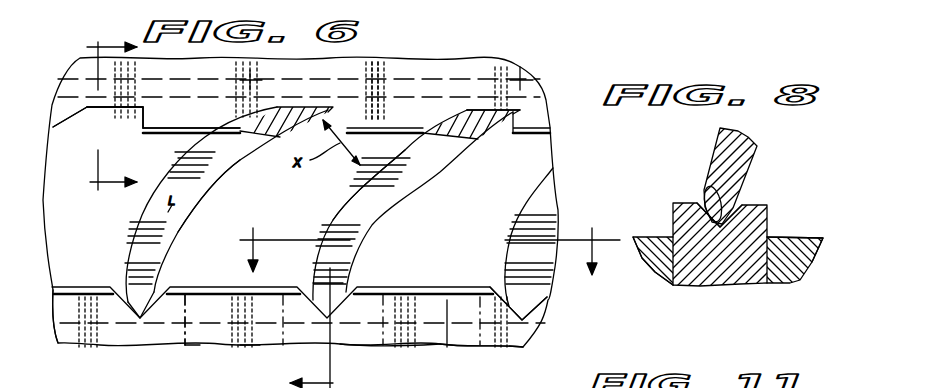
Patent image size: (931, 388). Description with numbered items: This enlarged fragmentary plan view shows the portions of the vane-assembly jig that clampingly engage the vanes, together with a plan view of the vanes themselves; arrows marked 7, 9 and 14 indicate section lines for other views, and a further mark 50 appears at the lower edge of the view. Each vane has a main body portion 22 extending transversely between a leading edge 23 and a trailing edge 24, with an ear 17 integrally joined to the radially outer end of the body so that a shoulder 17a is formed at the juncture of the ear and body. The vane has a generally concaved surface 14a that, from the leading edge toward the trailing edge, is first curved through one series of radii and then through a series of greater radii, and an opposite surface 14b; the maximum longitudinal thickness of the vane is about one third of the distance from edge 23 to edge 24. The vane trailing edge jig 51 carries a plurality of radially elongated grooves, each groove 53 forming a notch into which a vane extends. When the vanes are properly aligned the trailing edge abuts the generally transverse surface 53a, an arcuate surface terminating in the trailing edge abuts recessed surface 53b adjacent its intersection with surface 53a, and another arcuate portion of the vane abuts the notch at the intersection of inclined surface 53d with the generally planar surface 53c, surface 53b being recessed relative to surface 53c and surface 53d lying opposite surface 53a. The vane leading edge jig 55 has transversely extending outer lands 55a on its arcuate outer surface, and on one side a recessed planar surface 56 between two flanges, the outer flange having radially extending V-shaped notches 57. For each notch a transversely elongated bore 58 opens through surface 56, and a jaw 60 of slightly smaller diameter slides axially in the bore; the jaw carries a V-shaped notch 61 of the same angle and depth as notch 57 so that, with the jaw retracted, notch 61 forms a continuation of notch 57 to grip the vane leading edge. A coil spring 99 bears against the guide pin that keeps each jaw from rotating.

In FIG. 6, the section line 7- 7 is at (351, 318).
In FIG. 6, the section line 9- 9 is at (91, 112).
In FIG. 6, the section line 14-14 / helical blade 14 is at (432, 236).
In FIG. 6, the concaved surface 14a is at (140, 220).
In FIG. 6, the opposite surface 14b is at (140, 220).
In FIG. 6, the ear 17 is at (383, 190).
In FIG. 6, the shoulder 17a is at (235, 150).
In FIG. 6, the main body portion 22 is at (453, 140).
In FIG. 6, the leading edge 23 is at (147, 300).
In FIG. 8, the leading edge 23 is at (703, 180).
In FIG. 6, the trailing edge 24 is at (513, 112).
In FIG. 6, the base 50 is at (252, 366).
In FIG. 6, the vane trailing edge jig 51 is at (379, 74).
In FIG. 6, the radially elongated groove 53 is at (110, 120).
In FIG. 6, the generally transverse surface 53a is at (143, 117).
In FIG. 6, the recessed surface 53b is at (112, 110).
In FIG. 6, the generally planar surface 53c is at (173, 133).
In FIG. 6, the inclined surface 53d is at (55, 115).
In FIG. 6, the vane leading edge jig 55 is at (63, 340).
In FIG. 8, the vane leading edge jig 55 is at (648, 278).
In FIG. 6, the outer land 55a is at (433, 337).
In FIG. 6, the planar surface 56 is at (523, 347).
In FIG. 8, the planar surface 56 is at (790, 247).
In FIG. 6, the notch 57 is at (533, 306).
In FIG. 6, the transversely elongated bore 58 is at (185, 333).
In FIG. 8, the jaw 60 is at (752, 278).
In FIG. 8, the V-shaped notch 61 is at (747, 203).
In FIG. 6, the coil spring 99 is at (172, 366).